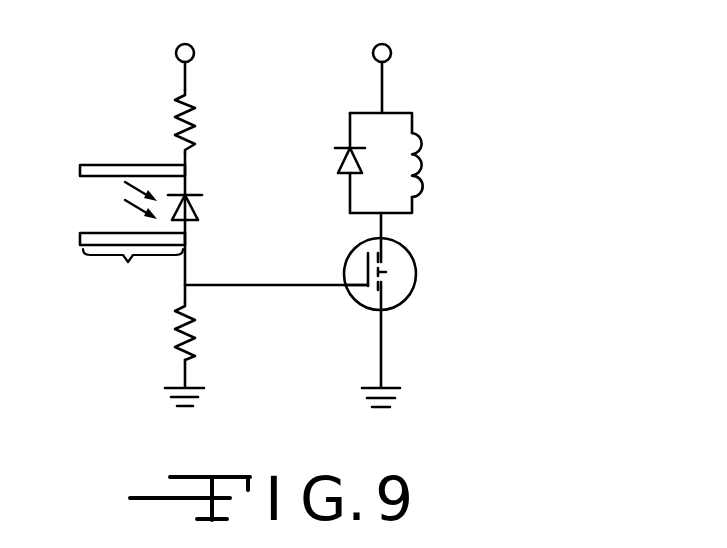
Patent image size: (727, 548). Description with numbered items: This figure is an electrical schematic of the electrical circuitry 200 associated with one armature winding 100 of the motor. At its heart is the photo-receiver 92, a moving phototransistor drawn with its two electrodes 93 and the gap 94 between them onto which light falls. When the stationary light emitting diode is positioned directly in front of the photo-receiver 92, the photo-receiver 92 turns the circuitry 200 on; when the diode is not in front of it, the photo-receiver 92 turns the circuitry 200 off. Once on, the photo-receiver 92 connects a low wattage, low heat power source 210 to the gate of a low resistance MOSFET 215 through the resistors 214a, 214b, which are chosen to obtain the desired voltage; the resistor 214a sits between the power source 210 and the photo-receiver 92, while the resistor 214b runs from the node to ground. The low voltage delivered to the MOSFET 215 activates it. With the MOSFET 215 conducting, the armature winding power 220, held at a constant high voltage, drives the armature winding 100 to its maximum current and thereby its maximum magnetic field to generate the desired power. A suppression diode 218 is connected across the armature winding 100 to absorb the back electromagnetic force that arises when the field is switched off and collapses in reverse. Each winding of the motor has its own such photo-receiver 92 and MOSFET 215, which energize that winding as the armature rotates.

The electrical circuitry 200 is at (530, 100).
The power source 210 is at (176, 52).
The resistor 214a is at (178, 118).
The resistor 214b is at (172, 330).
The electrodes 93 is at (80, 172).
The photo-receiver 92 is at (197, 212).
The electrode gap / active region 94 is at (128, 262).
The armature winding power 220 is at (392, 53).
The suppression diode 218 is at (340, 163).
The armature winding 100 is at (422, 167).
The MOSFET 215 is at (420, 258).